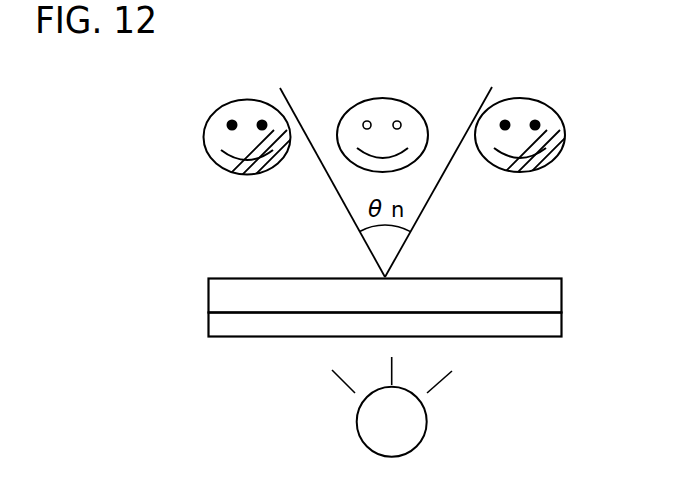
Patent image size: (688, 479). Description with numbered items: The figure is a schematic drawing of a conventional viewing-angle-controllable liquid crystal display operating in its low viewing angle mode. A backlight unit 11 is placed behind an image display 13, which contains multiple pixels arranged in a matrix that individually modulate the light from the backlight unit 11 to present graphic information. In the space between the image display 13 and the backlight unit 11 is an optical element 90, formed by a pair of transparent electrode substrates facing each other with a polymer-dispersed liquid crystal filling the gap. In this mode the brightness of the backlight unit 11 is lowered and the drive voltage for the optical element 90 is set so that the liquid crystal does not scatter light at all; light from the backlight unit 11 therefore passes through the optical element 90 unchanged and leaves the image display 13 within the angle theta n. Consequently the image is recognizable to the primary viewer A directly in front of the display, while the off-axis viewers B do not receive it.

The backlight unit 11 is at (420, 420).
The image display 13 is at (552, 293).
The optical element 90 is at (551, 325).
The primary viewer A is at (382, 117).
The viewers other than the primary viewer B is at (411, 166).